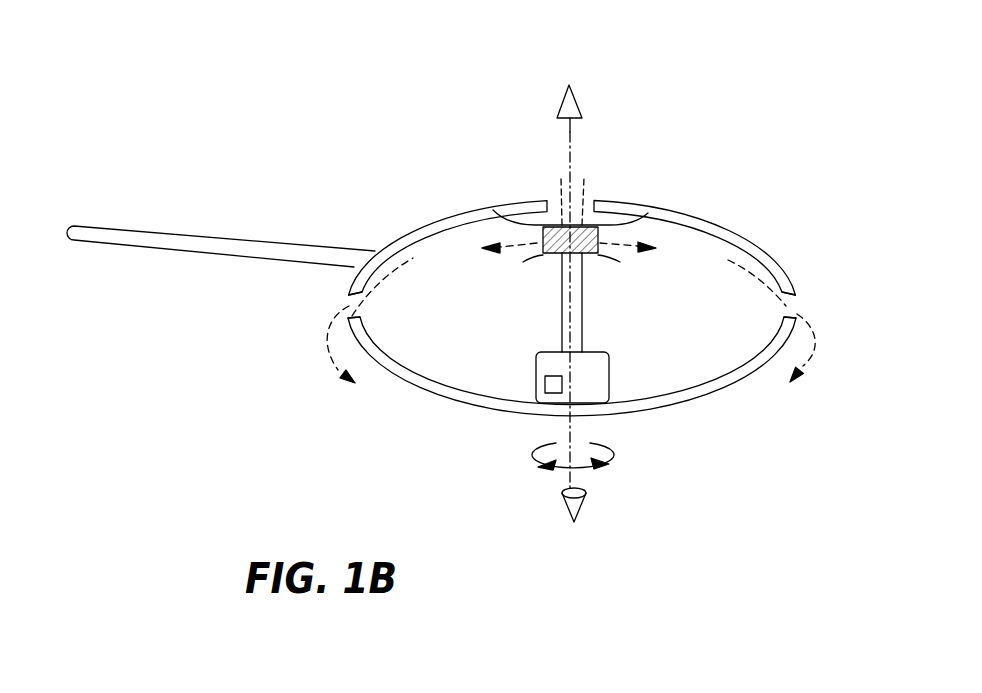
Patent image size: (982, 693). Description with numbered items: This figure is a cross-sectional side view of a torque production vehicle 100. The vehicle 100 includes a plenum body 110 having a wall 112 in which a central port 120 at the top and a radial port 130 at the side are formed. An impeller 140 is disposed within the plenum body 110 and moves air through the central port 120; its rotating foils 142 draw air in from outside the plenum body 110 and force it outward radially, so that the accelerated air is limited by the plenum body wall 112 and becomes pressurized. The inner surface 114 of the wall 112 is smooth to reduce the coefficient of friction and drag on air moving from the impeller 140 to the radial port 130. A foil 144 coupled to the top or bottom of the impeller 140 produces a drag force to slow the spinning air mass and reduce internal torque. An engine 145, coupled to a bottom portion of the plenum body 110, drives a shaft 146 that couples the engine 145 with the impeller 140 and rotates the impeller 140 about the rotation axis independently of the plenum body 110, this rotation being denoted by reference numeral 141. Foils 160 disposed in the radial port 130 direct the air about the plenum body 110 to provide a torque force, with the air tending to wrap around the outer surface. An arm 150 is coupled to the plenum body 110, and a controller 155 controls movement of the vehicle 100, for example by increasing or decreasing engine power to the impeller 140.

The vehicle 100 is at (453, 120).
The plenum body 110 is at (718, 207).
The wall 112 is at (767, 261).
The inner surface 114 is at (415, 242).
The central port 120 is at (587, 195).
The radial port 130 is at (347, 305).
The foils 160 is at (796, 304).
The impeller 140 is at (593, 268).
The rotation 141 is at (536, 453).
The foils 142 is at (597, 227).
The foil 144 is at (525, 223).
The engine 145 is at (612, 366).
The shaft 146 is at (585, 330).
The arm 150 is at (145, 238).
The controller 155 is at (545, 385).